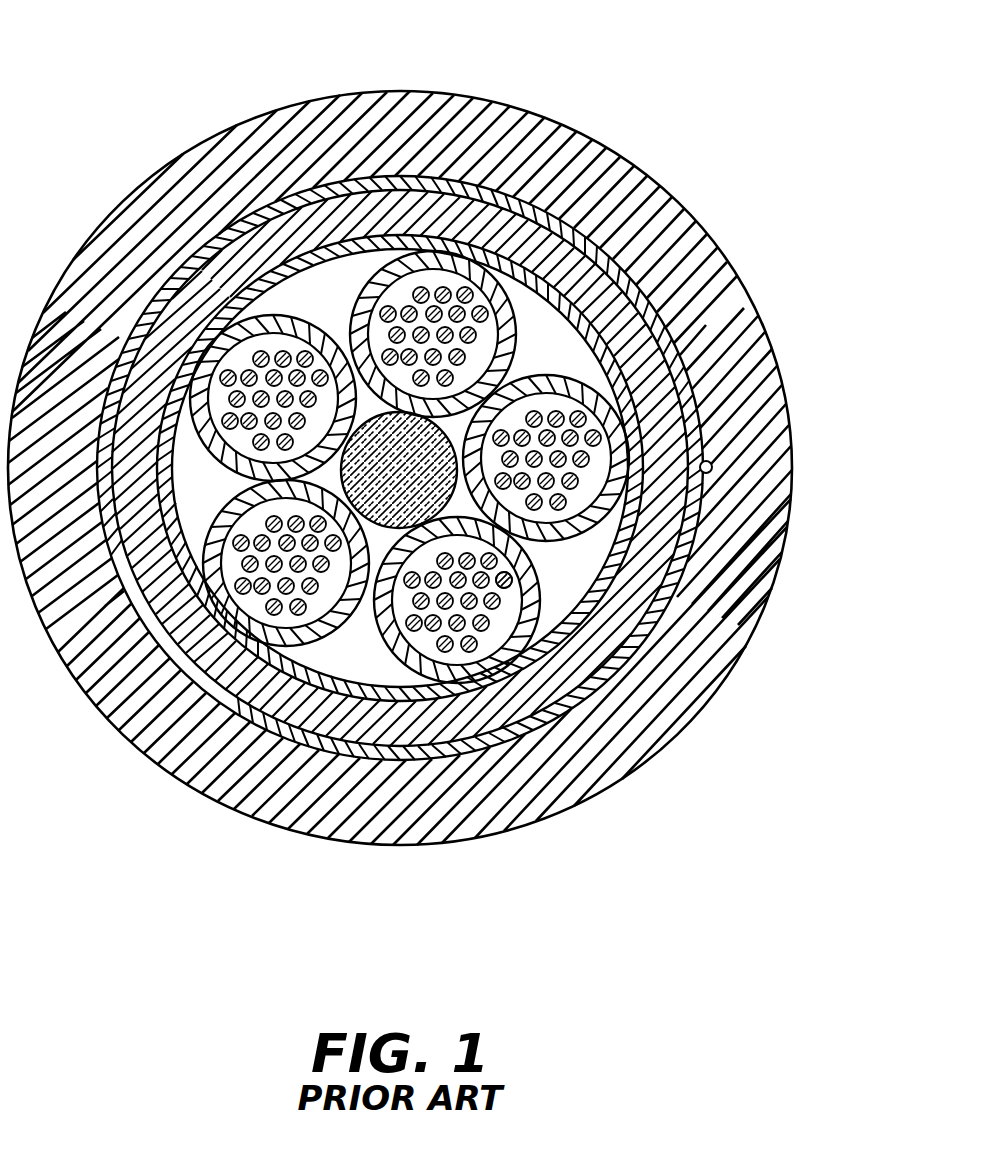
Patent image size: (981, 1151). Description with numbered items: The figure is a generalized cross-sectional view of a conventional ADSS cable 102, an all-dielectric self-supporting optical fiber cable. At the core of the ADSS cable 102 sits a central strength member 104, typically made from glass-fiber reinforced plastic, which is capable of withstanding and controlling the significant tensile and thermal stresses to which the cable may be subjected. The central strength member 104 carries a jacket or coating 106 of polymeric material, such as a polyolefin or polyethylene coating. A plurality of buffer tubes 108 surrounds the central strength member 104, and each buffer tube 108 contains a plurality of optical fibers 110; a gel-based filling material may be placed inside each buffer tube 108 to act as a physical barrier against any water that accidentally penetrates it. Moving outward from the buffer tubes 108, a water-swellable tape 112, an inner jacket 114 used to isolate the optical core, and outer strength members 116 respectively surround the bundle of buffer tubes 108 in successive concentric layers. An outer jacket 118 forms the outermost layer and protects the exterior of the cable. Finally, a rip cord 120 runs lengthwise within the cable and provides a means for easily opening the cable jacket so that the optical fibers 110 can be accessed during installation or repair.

The ADSS cable 102 is at (190, 126).
The central strength member 104 is at (440, 433).
The jacket or coating 106 is at (372, 620).
The buffer tube 108 is at (423, 254).
The optical fiber 110 is at (512, 581).
The water-swellable tape 112 is at (563, 640).
The inner jacket 114 is at (648, 303).
The outer strength members 116 is at (610, 260).
The outer jacket 118 is at (605, 148).
The rip cord 120 is at (713, 467).